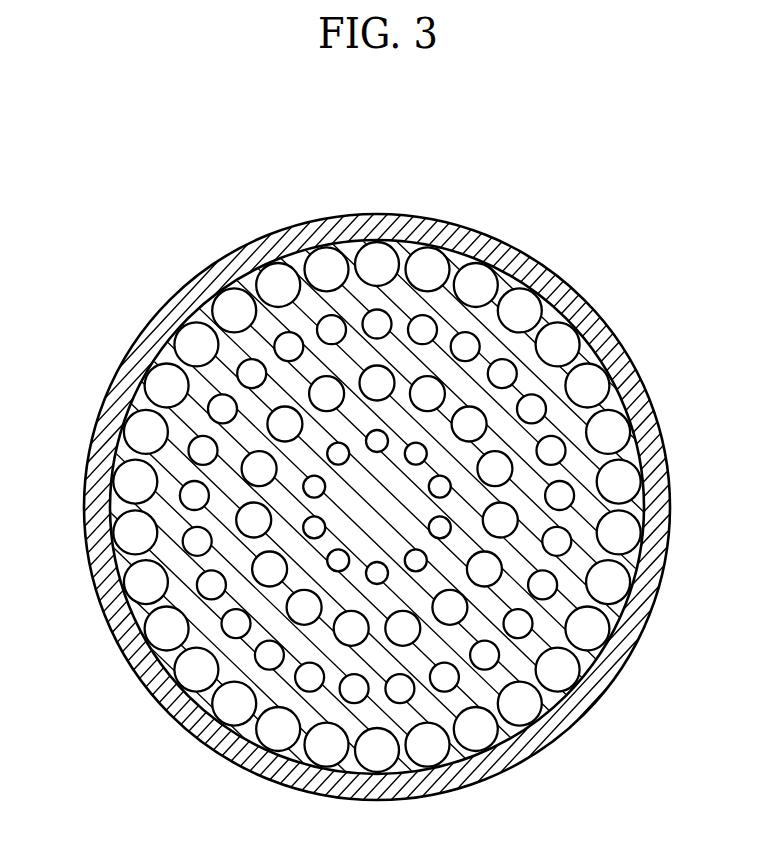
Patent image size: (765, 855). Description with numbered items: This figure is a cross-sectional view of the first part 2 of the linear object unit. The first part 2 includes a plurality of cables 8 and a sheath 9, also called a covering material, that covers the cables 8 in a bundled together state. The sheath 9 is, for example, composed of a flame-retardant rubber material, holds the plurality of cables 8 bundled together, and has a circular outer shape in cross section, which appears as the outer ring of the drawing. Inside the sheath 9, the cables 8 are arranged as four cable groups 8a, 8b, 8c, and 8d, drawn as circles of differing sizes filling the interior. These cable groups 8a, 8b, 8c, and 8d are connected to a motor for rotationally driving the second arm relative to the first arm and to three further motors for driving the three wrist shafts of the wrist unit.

The first part 2 is at (148, 298).
The sheath 9 is at (300, 219).
The cables 8 is at (645, 240).
The cable group 8a is at (409, 247).
The cable group 8b is at (463, 301).
The cable group 8c is at (450, 388).
The cable group 8d is at (450, 482).